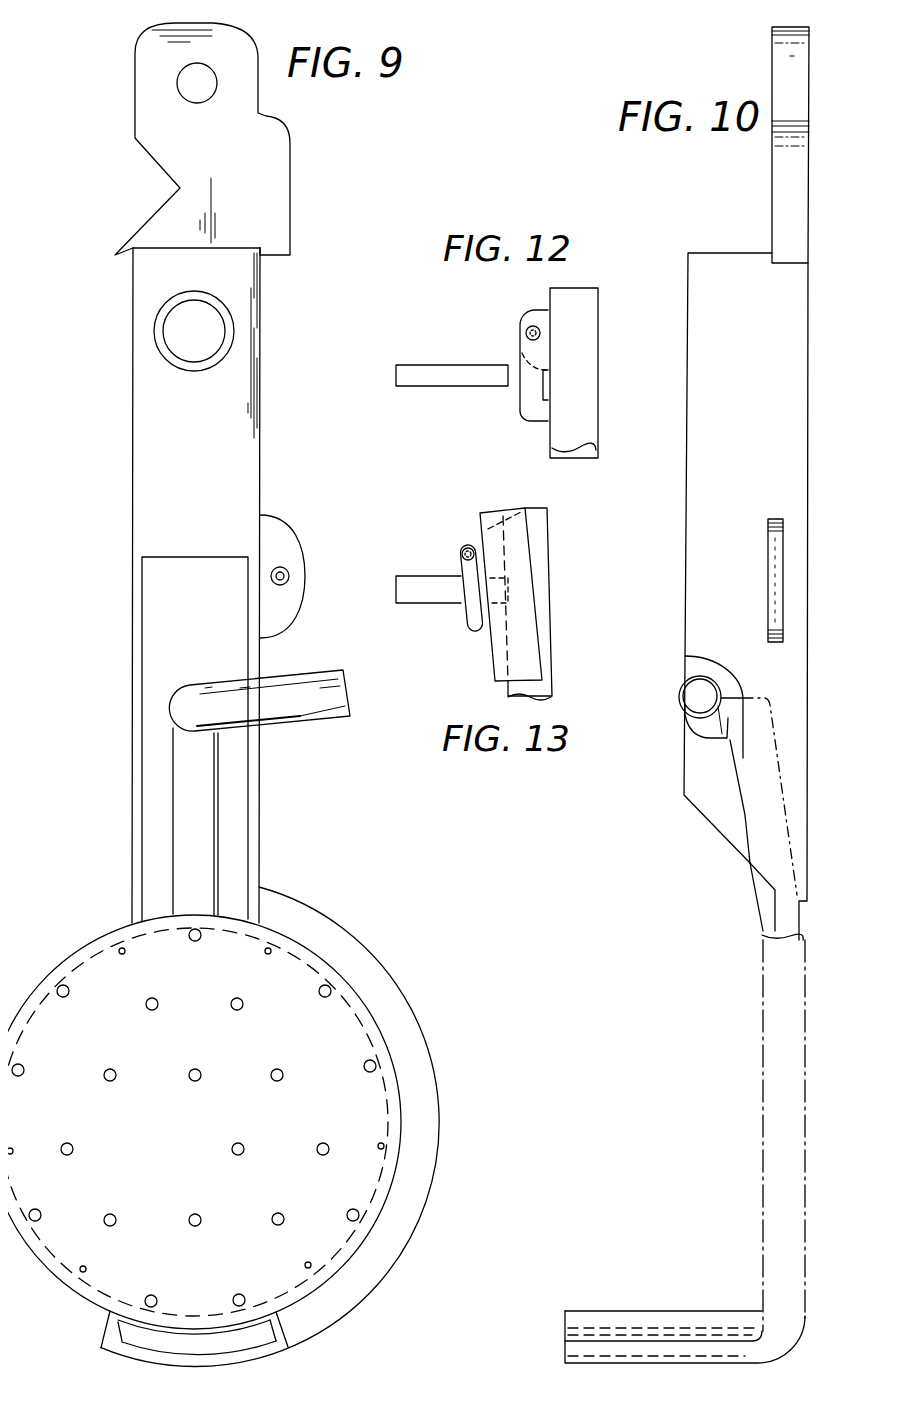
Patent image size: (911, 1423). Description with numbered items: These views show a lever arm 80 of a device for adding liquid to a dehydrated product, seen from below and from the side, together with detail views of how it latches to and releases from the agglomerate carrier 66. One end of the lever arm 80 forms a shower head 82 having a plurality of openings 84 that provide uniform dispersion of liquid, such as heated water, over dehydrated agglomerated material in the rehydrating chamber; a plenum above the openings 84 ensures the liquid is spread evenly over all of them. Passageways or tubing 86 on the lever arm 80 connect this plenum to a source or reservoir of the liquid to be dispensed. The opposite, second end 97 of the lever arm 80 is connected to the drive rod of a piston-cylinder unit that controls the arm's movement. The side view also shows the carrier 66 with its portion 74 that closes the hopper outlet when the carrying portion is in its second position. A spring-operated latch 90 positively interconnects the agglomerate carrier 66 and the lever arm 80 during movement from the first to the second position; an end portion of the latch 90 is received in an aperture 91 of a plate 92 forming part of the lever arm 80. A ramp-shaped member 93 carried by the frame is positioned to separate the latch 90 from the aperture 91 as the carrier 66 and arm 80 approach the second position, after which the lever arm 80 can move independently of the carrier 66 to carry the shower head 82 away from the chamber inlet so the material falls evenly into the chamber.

In FIG. 12, the agglomerate carrier 66 is at (582, 280).
In FIG. 13, the agglomerate carrier 66 is at (480, 501).
In FIG. 10, the portion of the carrier 74 is at (802, 1090).
In FIG. 9, the lever arm 80 is at (320, 236).
In FIG. 12, the lever arm 80 is at (567, 452).
In FIG. 13, the lever arm 80 is at (545, 558).
In FIG. 10, the lever arm 80 is at (695, 193).
In FIG. 9, the shower head 82 is at (72, 940).
In FIG. 9, the openings 84 is at (359, 1064).
In FIG. 9, the tubing 86 is at (298, 702).
In FIG. 12, the spring-operated latch 90 is at (506, 326).
In FIG. 13, the spring-operated latch 90 is at (457, 630).
In FIG. 9, the aperture 91 is at (280, 575).
In FIG. 9, the plate 92 is at (282, 512).
In FIG. 12, the plate 92 is at (530, 302).
In FIG. 13, the plate 92 is at (472, 508).
In FIG. 10, the plate 92 is at (761, 530).
In FIG. 12, the ramp-shaped member 93 is at (425, 358).
In FIG. 13, the ramp-shaped member 93 is at (421, 574).
In FIG. 9, the second end of the lever arm 97 is at (127, 48).
In FIG. 10, the second end of the lever arm 97 is at (765, 60).